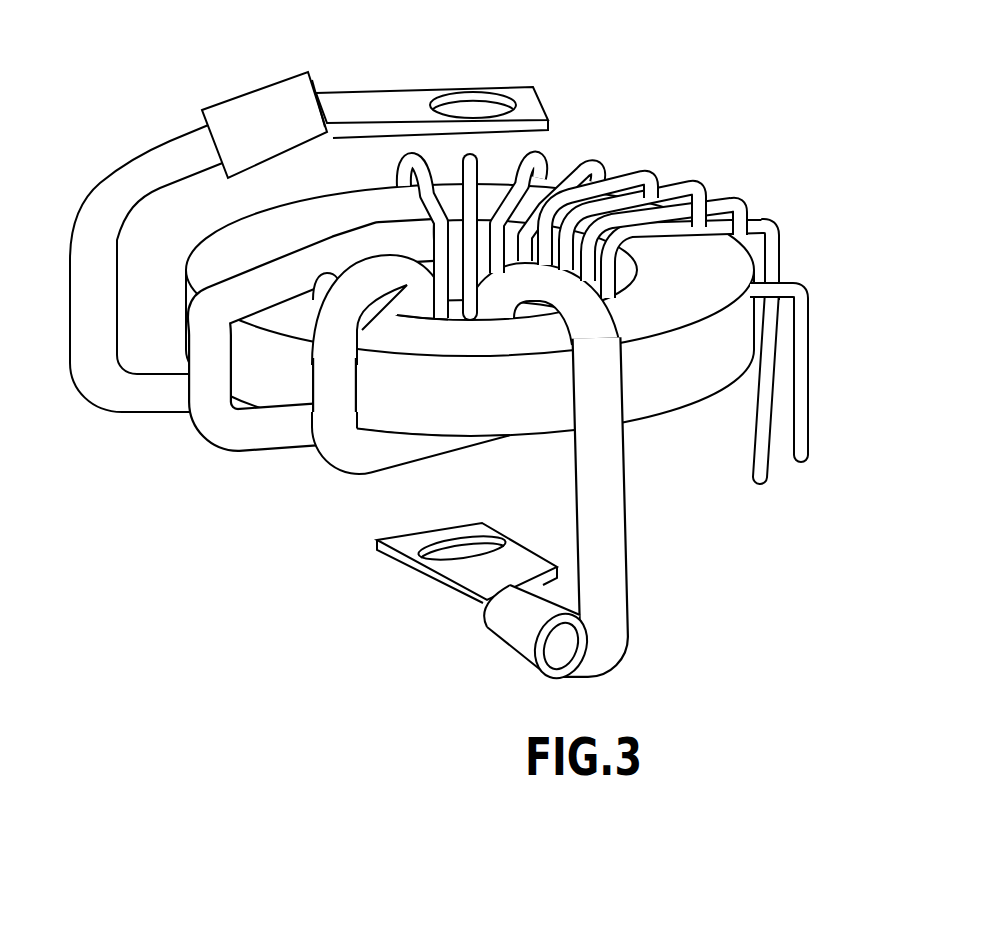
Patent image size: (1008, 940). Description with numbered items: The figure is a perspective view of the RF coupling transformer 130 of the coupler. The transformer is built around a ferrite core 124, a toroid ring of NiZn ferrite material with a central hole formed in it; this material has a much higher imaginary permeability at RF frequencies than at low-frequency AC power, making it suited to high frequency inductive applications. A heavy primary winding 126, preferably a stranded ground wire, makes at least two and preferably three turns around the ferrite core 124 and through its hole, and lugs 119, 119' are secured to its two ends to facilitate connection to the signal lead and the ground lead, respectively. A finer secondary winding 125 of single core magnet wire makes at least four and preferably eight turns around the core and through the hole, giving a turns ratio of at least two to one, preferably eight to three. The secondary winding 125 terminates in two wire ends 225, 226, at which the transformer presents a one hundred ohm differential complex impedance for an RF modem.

The lug 119 is at (375, 105).
The lug 119' is at (483, 604).
The ferrite core 124 is at (653, 402).
The secondary winding 125 is at (673, 190).
The primary winding 126 is at (340, 468).
The RF coupling transformer 130 is at (579, 95).
The wire end 225 is at (801, 464).
The wire end 226 is at (759, 486).